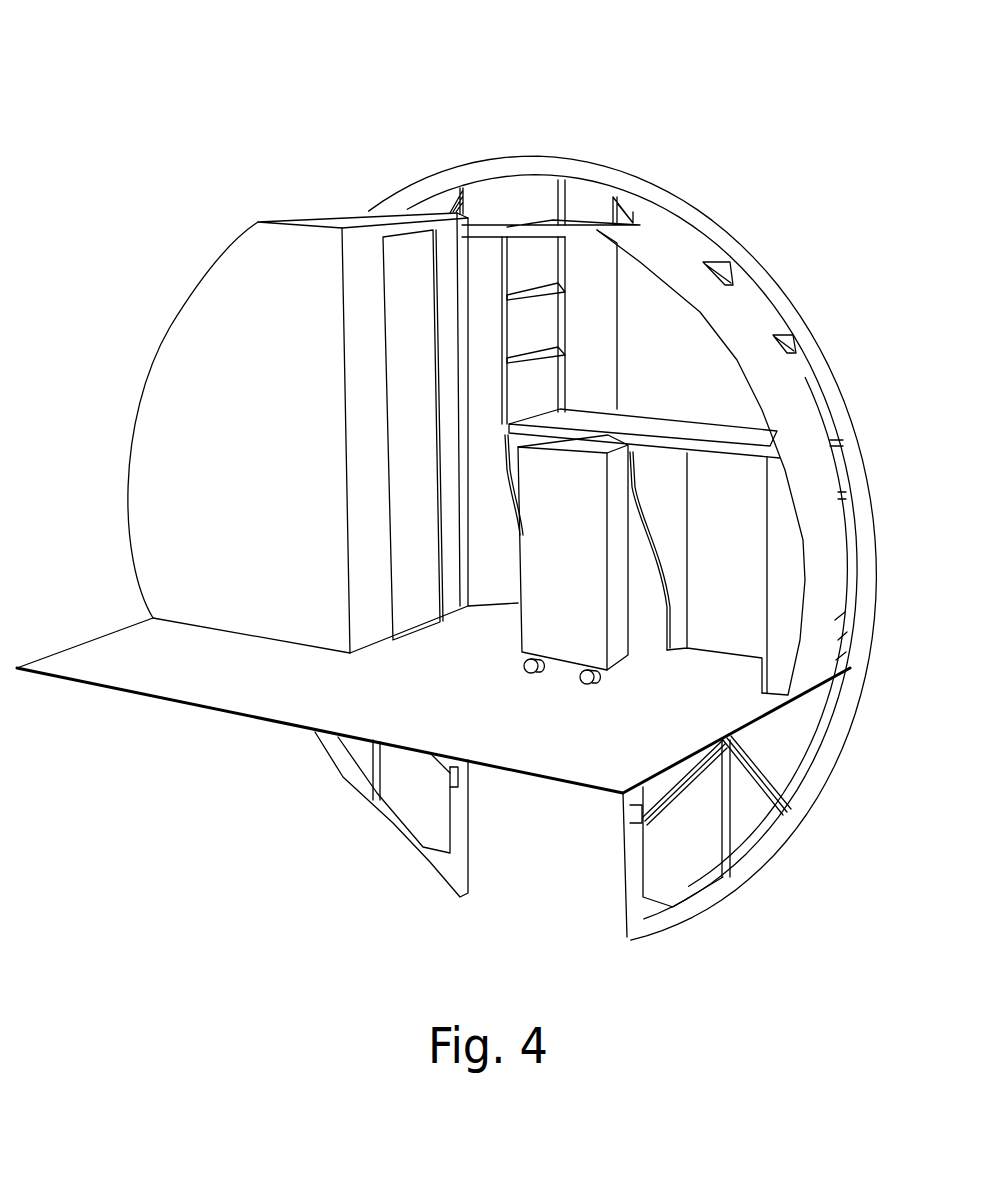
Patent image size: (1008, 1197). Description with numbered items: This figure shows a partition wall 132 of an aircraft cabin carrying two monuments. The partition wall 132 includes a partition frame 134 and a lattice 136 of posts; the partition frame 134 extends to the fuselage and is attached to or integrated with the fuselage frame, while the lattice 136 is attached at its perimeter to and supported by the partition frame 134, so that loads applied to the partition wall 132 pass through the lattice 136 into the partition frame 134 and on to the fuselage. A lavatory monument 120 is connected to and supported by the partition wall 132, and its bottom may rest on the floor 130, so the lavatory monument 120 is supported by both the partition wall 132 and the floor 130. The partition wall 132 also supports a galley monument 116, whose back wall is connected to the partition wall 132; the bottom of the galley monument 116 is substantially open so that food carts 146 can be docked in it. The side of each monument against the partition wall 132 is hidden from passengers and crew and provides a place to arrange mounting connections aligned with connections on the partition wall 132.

The galley monument 116 is at (732, 322).
The lavatory monument 120 is at (285, 497).
The floor 130 is at (510, 718).
The partition wall 132 is at (705, 132).
The partition frame 134 is at (850, 399).
The lattice 136 is at (746, 820).
The food cart 146 is at (588, 628).